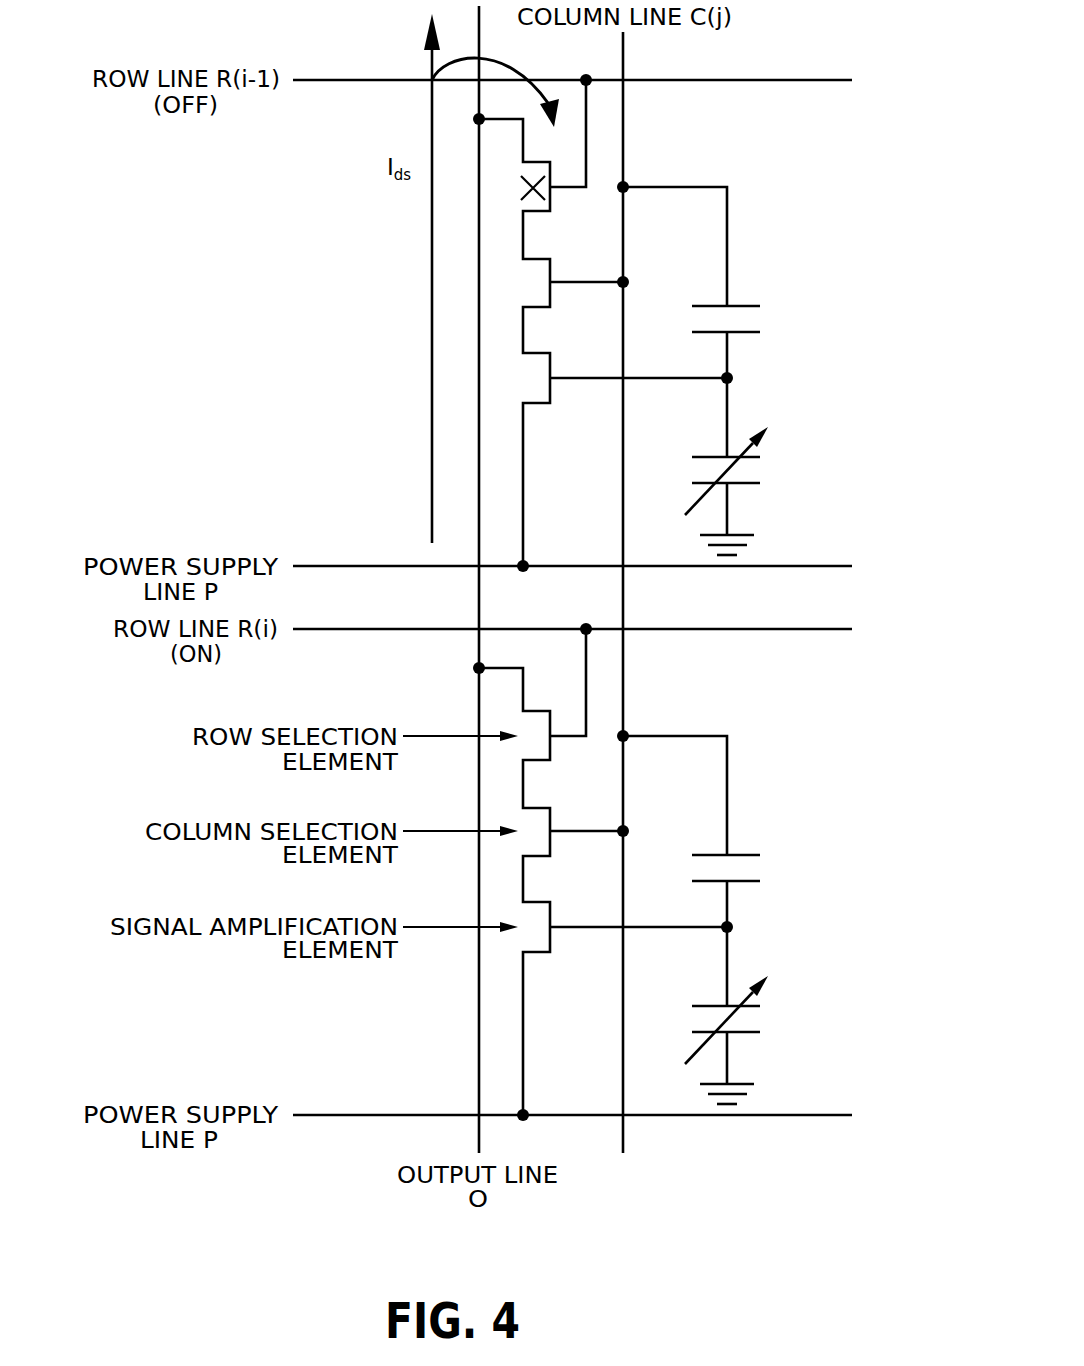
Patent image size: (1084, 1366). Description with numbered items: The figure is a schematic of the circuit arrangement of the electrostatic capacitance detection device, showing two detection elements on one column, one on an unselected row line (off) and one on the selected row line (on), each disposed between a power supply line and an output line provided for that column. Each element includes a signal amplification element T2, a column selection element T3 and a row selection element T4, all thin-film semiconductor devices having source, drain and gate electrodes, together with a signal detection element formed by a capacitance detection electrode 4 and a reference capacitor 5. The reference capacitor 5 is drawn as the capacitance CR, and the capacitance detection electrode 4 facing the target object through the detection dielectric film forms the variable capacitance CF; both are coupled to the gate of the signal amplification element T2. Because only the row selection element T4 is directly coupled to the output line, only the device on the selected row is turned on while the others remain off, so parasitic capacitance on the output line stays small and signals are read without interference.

The capacitance detection electrode 4 is at (749, 754).
The reference capacitor 5 is at (718, 596).
The signal amplification element T2 is at (625, 721).
The column selection element T3 is at (576, 530).
The row selection element T4 is at (532, 429).
The reference capacitor CR is at (749, 855).
The electrostatic capacitance of the detection capacitor CF is at (752, 1001).